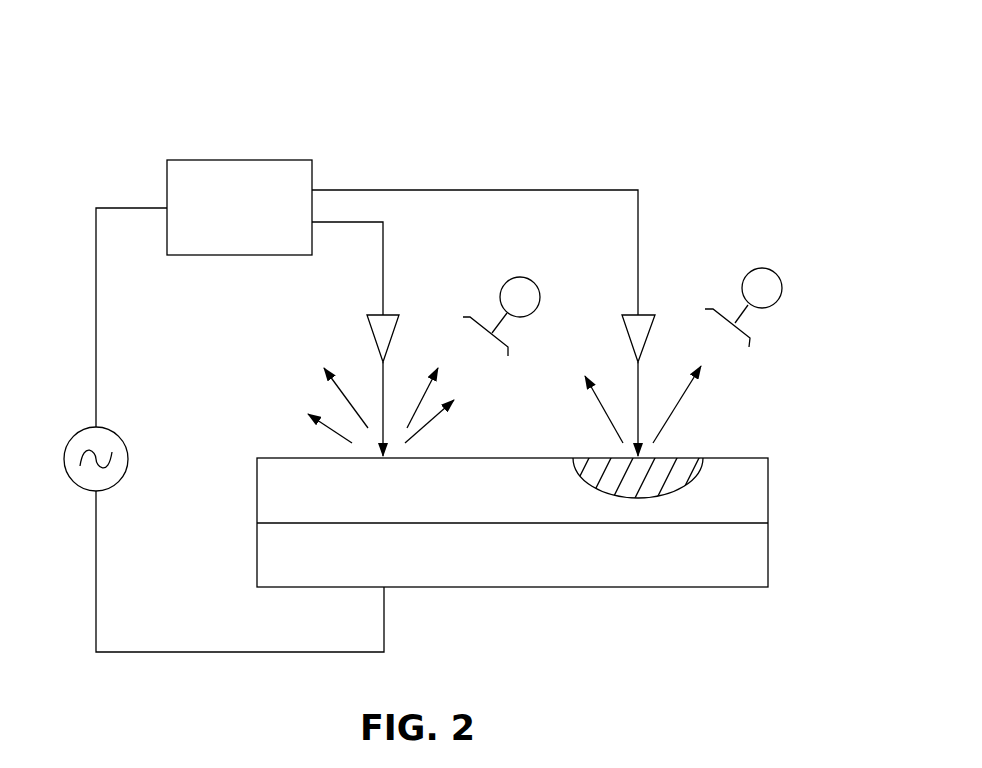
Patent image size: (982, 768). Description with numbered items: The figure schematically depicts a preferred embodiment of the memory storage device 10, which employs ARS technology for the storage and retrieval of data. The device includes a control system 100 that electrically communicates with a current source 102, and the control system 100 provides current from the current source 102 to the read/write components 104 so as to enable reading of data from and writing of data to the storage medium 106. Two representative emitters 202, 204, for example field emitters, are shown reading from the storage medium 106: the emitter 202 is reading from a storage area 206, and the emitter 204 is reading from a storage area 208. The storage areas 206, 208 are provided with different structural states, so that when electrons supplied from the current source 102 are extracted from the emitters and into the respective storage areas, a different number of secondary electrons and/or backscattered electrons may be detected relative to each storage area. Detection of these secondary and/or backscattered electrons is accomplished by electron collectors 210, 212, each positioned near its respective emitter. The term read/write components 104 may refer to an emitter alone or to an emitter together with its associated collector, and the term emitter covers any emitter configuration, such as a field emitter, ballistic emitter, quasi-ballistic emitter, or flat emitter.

The memory storage device 10 is at (768, 61).
The control system 100 is at (257, 160).
The current source 102 is at (128, 459).
The read/write components 104 is at (559, 213).
The storage medium 106 is at (737, 587).
The emitter 202 is at (390, 315).
The emitter 204 is at (645, 315).
The storage area 206 is at (413, 458).
The storage area 208 is at (687, 458).
The collector 210 is at (518, 277).
The collector 212 is at (765, 268).